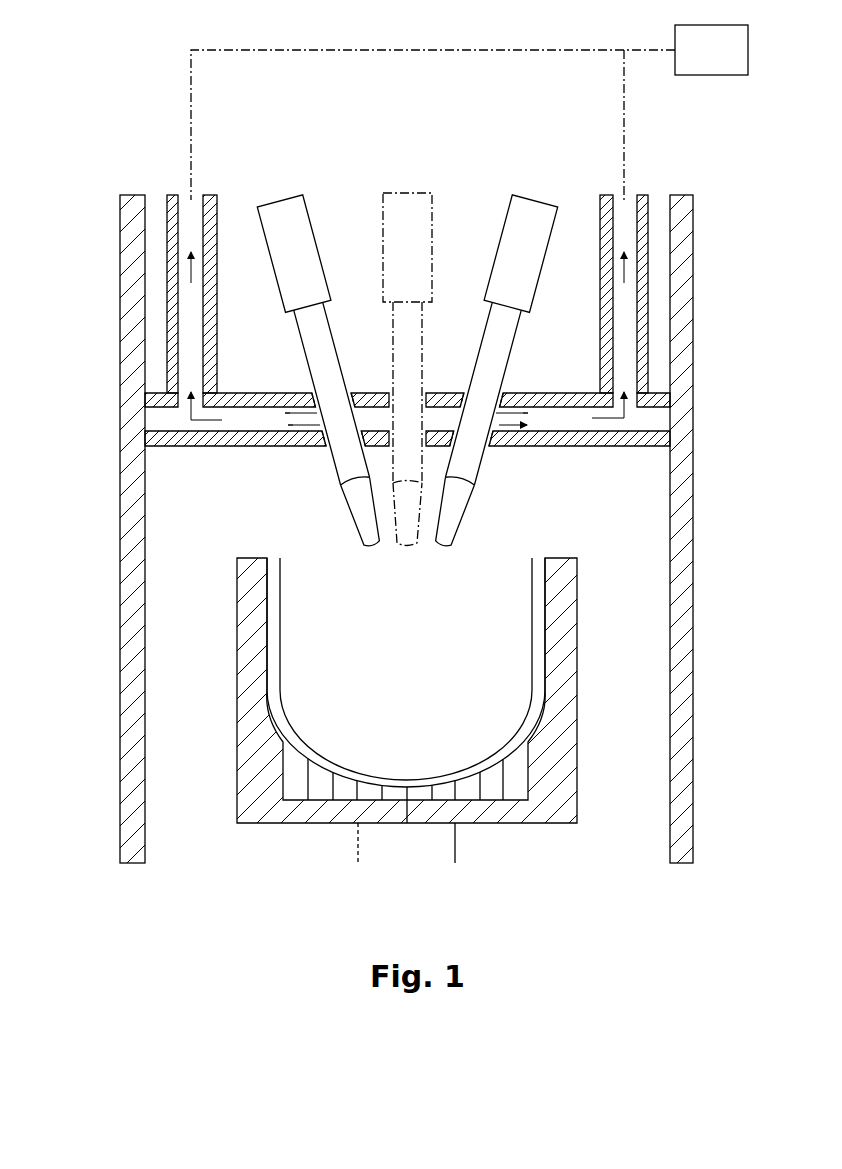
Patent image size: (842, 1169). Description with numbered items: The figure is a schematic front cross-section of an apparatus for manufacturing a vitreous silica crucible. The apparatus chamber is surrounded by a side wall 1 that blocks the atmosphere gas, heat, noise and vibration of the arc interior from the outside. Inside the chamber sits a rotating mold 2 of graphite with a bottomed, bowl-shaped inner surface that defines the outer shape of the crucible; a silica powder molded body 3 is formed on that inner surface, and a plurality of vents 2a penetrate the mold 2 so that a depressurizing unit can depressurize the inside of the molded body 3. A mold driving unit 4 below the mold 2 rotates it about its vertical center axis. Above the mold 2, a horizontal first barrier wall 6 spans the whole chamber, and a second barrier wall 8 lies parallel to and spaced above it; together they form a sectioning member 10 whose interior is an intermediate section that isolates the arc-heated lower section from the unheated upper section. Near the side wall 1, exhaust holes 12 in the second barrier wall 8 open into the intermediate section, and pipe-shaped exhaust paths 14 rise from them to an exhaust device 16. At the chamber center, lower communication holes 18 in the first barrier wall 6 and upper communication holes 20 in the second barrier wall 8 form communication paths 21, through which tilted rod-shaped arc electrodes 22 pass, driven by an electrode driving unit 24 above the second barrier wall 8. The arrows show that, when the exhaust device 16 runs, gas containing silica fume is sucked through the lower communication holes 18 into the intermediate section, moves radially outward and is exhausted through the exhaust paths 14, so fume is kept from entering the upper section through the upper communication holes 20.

The side wall 1 is at (693, 652).
The mold 2 is at (577, 752).
The vents 2a is at (265, 680).
The silica powder molded body 3 is at (532, 633).
The mold driving unit 4 is at (457, 845).
The first barrier wall 6 is at (445, 450).
The second barrier wall 8 is at (668, 407).
The sectioning member 10 is at (471, 428).
The exhaust holes 12 is at (183, 390).
The exhaust path 14 is at (167, 285).
The exhaust device 16 is at (748, 50).
The lower communication holes 18 is at (322, 453).
The upper communication holes 20 is at (300, 392).
The communication path 21 is at (372, 392).
The arc electrodes 22 is at (331, 335).
The electrode driving unit 24 is at (308, 220).